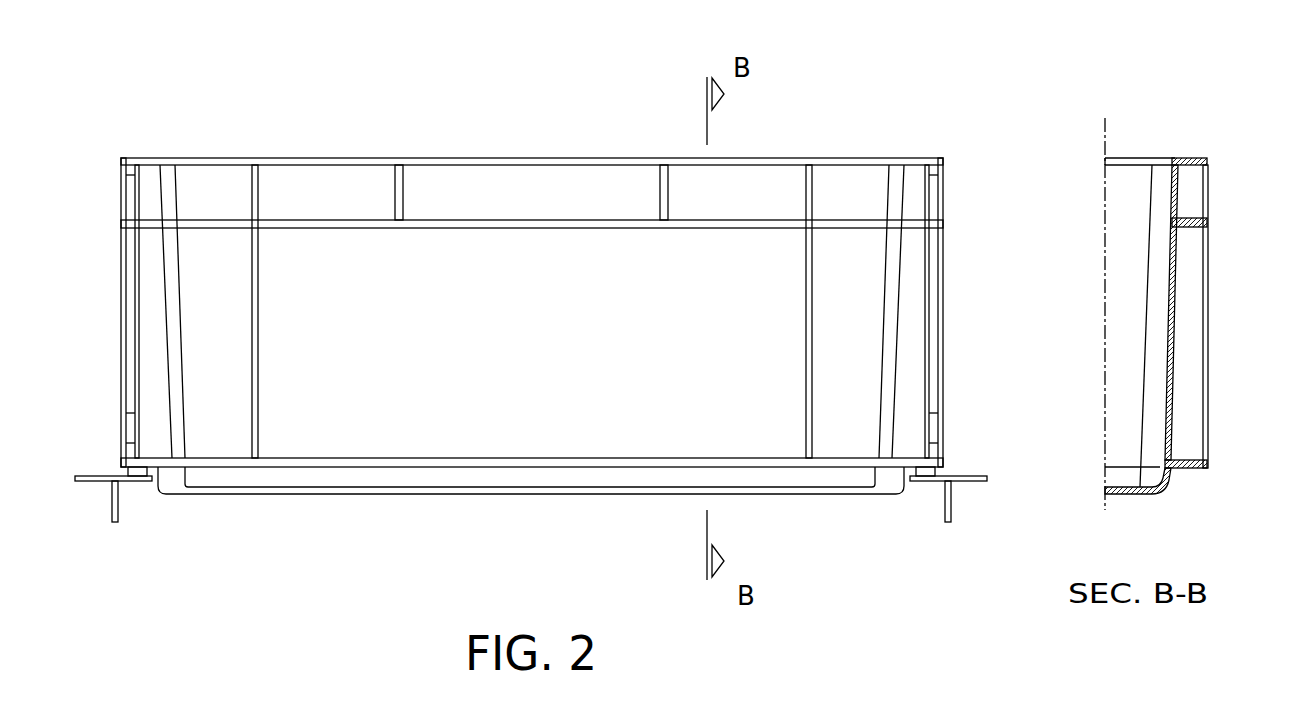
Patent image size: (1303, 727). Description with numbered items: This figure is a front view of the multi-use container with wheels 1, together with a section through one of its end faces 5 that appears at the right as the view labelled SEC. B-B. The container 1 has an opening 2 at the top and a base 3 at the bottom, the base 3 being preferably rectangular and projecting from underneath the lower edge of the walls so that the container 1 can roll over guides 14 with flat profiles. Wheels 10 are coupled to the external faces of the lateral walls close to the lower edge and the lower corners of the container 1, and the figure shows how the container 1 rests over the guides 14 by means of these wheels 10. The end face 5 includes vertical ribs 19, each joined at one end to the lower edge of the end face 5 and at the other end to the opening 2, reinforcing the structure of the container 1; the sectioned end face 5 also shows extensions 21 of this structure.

The multi-use container with wheels 1 is at (346, 588).
The opening 2 is at (358, 157).
The base 3 is at (283, 480).
The end face 5 is at (473, 400).
The wheel 10 is at (135, 470).
The guides 14 is at (112, 500).
The vertical rib 19 is at (248, 315).
The extension 21 is at (399, 198).